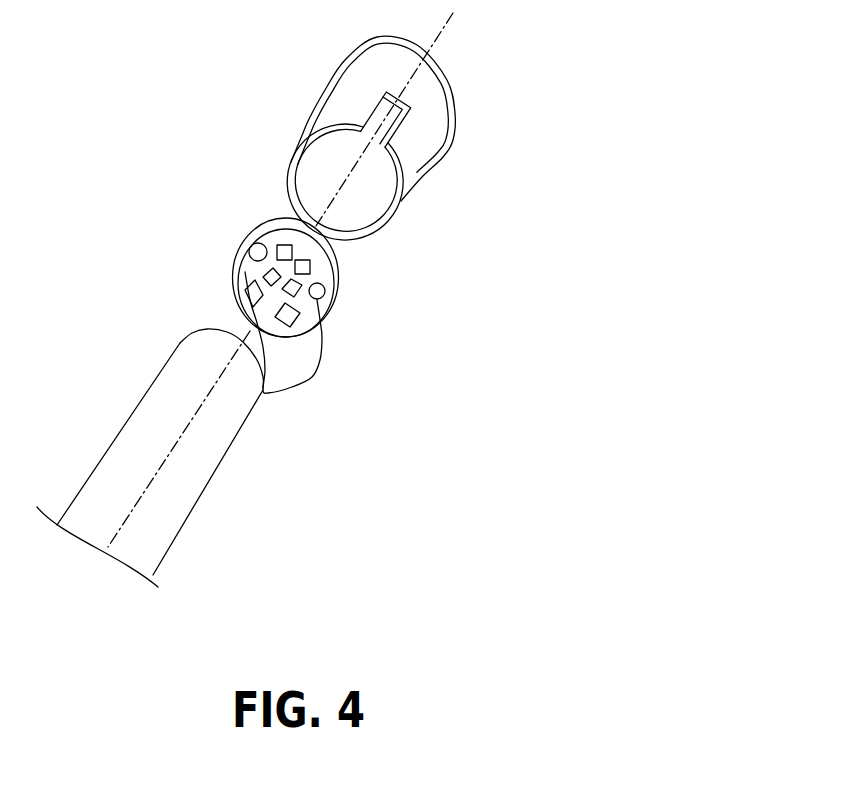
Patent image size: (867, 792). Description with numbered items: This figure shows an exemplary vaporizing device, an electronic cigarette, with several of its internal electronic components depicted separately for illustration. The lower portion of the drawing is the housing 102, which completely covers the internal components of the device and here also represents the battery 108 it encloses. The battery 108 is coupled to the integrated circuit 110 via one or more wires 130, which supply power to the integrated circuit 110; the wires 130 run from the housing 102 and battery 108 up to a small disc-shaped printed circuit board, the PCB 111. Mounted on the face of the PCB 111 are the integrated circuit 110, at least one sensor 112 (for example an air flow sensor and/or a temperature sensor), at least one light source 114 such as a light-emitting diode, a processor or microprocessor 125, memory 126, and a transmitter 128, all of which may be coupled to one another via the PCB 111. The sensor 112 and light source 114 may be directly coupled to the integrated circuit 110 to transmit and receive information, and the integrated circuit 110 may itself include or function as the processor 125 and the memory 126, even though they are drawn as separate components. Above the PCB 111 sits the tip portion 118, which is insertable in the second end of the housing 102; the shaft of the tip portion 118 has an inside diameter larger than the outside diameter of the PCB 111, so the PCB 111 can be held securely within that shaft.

The housing 102 is at (149, 458).
The battery 108 is at (147, 418).
The integrated circuit 110 is at (277, 245).
The printed circuit board 111 is at (285, 227).
The sensor 112 is at (300, 290).
The light source 114 is at (310, 267).
The tip portion 118 is at (450, 98).
The processor 125 is at (268, 273).
The memory 126 is at (257, 297).
The transmitter 128 is at (285, 315).
The wires 130 is at (323, 358).